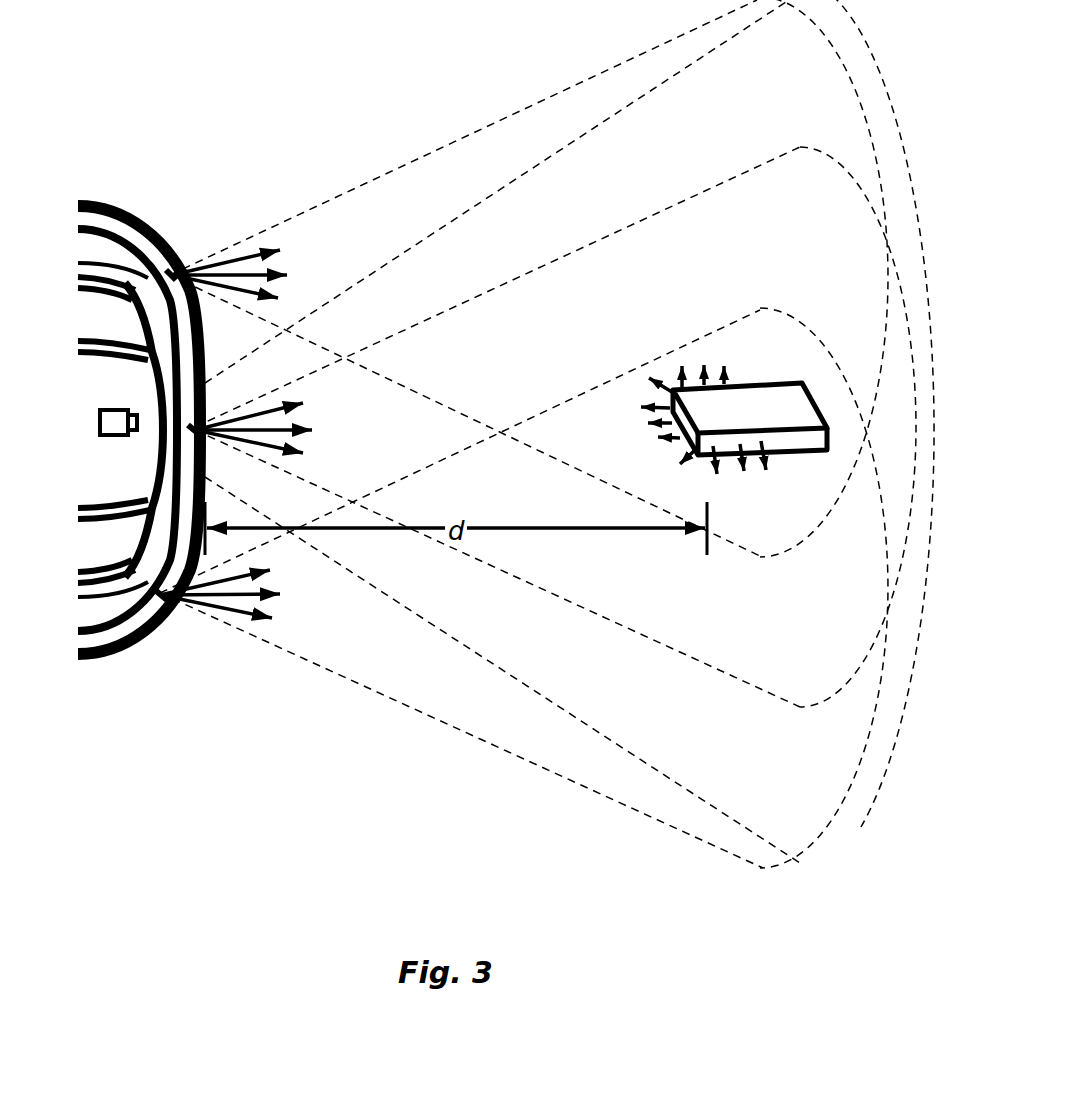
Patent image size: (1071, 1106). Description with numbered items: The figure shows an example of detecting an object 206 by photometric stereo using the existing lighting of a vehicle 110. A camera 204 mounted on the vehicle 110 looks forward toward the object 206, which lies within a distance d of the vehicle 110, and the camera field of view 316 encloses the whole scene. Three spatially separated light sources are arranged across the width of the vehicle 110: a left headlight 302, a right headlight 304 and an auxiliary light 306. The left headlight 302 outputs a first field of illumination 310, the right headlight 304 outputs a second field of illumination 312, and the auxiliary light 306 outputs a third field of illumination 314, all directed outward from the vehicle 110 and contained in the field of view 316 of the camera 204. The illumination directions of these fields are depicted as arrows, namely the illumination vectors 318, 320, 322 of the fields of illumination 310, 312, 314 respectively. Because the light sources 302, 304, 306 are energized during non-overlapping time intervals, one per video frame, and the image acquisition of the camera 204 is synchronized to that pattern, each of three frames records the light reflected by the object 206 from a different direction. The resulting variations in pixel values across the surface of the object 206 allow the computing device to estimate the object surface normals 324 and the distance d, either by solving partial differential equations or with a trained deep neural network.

The vehicle 110 is at (80, 215).
The camera 204 is at (98, 426).
The object 206 is at (766, 386).
The left headlight 302 is at (170, 273).
The right headlight 304 is at (163, 600).
The auxiliary light 306 is at (182, 434).
The first field of illumination 310 is at (338, 195).
The second field of illumination 312 is at (642, 818).
The third field of illumination 314 is at (708, 192).
The field of view 316 is at (856, 836).
The illumination vector 318 is at (303, 274).
The illumination vector 320 is at (303, 602).
The illumination vector 322 is at (330, 431).
The object surface normals 324 is at (625, 424).